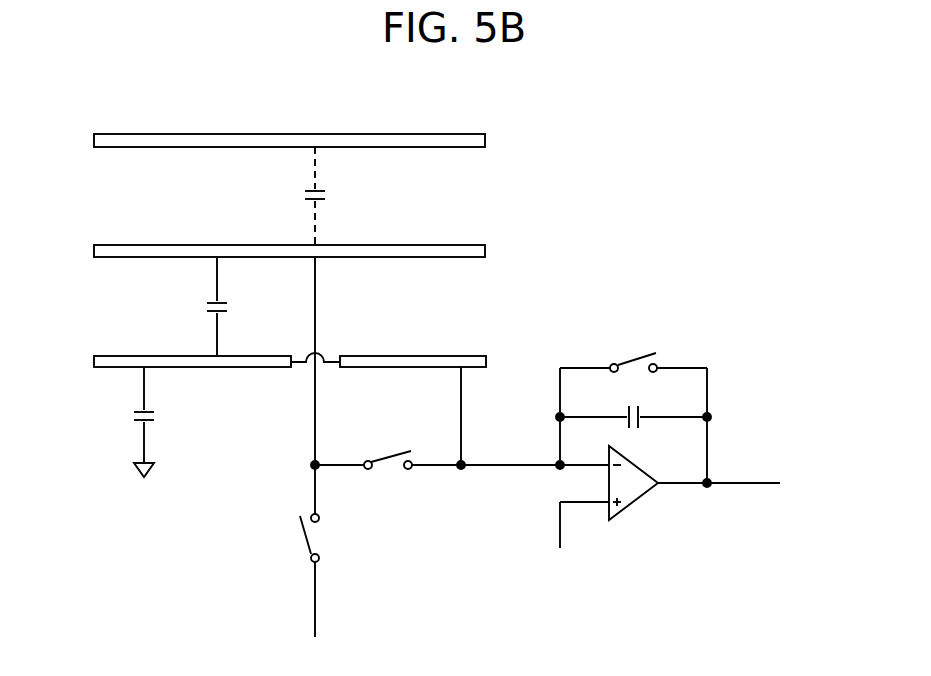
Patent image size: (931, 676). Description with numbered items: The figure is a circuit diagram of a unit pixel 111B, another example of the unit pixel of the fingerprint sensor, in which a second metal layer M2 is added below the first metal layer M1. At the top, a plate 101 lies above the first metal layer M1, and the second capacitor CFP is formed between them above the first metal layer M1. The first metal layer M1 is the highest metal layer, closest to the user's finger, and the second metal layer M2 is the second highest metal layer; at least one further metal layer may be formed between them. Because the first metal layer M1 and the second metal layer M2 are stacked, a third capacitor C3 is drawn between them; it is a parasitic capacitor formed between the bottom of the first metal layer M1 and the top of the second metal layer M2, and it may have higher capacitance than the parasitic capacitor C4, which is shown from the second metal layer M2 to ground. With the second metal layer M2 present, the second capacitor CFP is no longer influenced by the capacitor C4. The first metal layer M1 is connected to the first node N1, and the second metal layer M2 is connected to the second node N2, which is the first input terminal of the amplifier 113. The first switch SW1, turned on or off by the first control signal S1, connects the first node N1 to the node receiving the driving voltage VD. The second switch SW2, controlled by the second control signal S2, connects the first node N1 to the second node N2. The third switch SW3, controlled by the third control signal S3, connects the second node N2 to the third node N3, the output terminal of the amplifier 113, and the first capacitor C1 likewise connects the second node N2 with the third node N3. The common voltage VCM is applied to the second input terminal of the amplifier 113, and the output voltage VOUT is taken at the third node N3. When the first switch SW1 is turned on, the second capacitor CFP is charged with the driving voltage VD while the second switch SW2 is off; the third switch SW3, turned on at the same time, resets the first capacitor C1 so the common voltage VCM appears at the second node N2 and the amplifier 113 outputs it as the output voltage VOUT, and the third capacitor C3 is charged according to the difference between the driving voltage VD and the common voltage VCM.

The unit pixel 111B is at (780, 123).
The top electrode plate 101 is at (487, 141).
The second capacitor CFP is at (336, 196).
The first metal layer M1 is at (487, 251).
The second metal layer M2 is at (92, 361).
The third capacitor C3 is at (232, 306).
The parasitic capacitor C4 is at (159, 422).
The first node N1 is at (300, 465).
The first control signal S1 is at (292, 540).
The first switch SW1 is at (336, 575).
The driving voltage VD is at (314, 651).
The second control signal S2 is at (388, 444).
The second switch SW2 is at (437, 473).
The third control signal S3 is at (633, 344).
The third switch SW3 is at (633, 376).
The first capacitor C1 is at (633, 428).
The second node N2 is at (577, 477).
The third node N3 is at (719, 495).
The amplifier 113 is at (634, 506).
The common voltage VCM is at (573, 539).
The output voltage VOUT is at (815, 483).